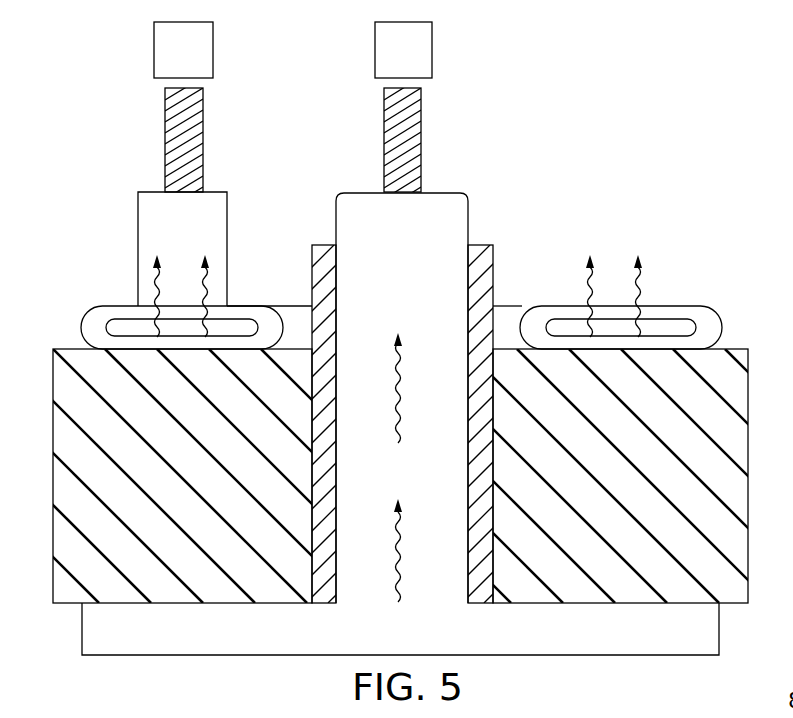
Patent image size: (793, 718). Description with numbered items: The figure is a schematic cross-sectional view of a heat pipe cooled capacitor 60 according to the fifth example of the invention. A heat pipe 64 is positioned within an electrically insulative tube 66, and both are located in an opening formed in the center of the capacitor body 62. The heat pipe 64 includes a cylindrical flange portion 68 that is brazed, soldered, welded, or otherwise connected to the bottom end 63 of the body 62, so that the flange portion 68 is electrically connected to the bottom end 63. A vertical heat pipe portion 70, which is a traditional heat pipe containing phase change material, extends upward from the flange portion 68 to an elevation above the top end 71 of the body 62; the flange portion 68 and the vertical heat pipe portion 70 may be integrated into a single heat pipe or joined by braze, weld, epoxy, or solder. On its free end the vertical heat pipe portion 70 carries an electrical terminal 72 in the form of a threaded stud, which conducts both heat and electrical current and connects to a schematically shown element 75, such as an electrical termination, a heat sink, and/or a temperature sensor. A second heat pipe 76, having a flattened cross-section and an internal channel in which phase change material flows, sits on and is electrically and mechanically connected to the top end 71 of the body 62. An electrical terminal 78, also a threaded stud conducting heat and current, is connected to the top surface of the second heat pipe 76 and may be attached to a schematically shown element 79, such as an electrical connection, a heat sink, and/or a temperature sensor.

The heat pipe cooled capacitor 60 is at (718, 183).
The capacitor body 62 is at (730, 432).
The bottom end 63 is at (190, 603).
The heat pipe 64 is at (440, 585).
The electrically insulative tube 66 is at (493, 527).
The cylindrical flange portion 68 is at (570, 630).
The vertical heat pipe portion 70 is at (445, 230).
The top end 71 is at (298, 348).
The electrical terminal 72 is at (421, 141).
The element 75 is at (375, 50).
The second heat pipe 76 is at (92, 322).
The electrical terminal 78 is at (157, 238).
The element 79 is at (154, 50).